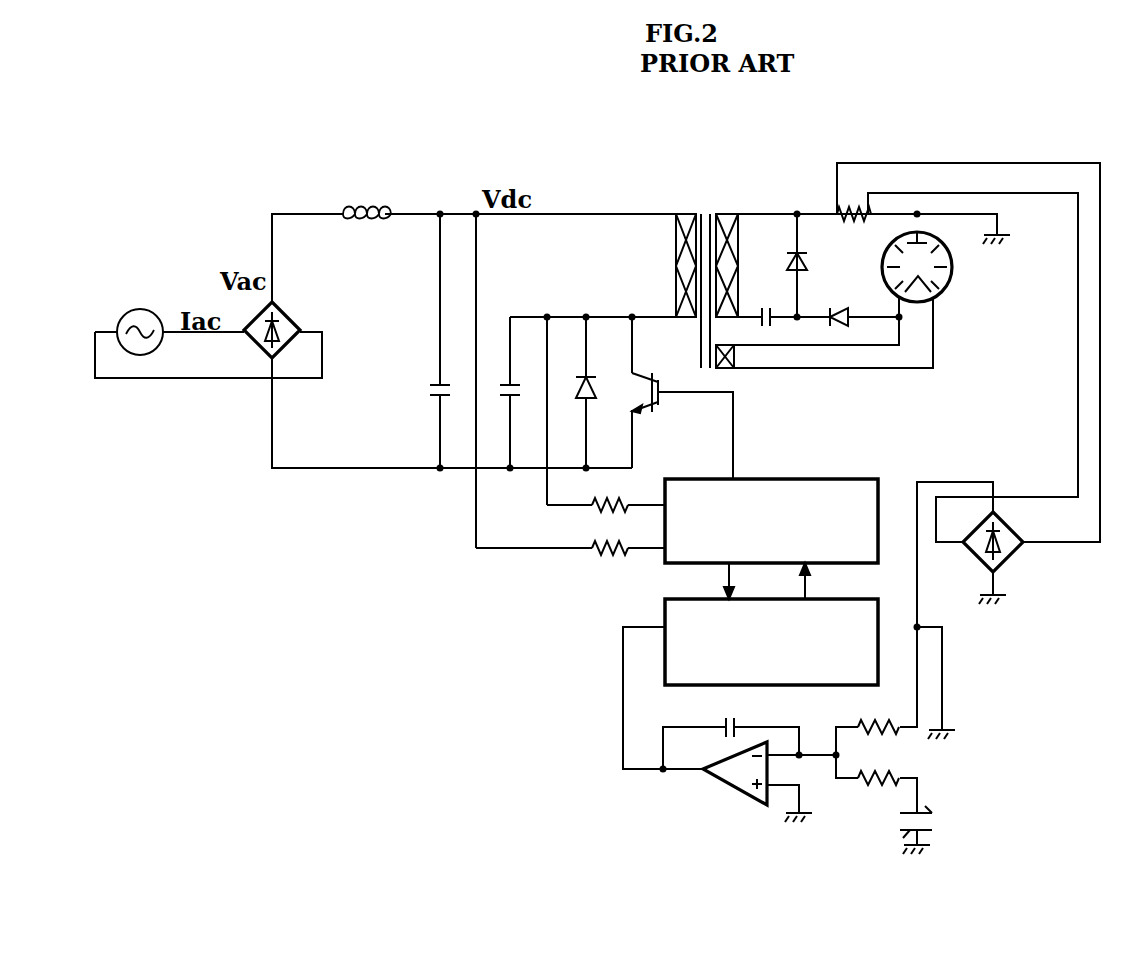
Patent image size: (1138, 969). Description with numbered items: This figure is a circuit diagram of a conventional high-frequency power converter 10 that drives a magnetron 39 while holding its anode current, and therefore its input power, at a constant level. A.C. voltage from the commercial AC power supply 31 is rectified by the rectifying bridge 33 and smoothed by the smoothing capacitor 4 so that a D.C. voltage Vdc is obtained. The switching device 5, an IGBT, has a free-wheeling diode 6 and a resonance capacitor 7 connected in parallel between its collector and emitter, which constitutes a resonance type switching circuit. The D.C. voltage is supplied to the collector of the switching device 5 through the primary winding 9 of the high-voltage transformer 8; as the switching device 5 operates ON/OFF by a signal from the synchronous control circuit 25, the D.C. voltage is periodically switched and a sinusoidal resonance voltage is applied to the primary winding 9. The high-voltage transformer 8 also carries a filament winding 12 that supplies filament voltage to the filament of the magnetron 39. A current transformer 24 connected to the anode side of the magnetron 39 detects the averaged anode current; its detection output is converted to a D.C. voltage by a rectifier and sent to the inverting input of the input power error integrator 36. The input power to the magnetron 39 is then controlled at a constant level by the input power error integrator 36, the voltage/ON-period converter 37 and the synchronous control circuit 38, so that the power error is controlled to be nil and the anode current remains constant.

The switching power supply circuit 10 is at (620, 188).
The commercial AC power supply 31 is at (118, 304).
The rectifying bridge 33 is at (291, 308).
The smoothing capacitor 4 is at (420, 390).
The resonance capacitor 7 is at (496, 374).
The free-wheeling diode 6 is at (598, 385).
The switching device 5 is at (656, 412).
The high-voltage transformer 8 is at (717, 278).
The primary winding 9 is at (673, 271).
The filament winding 12 is at (735, 368).
The current transformer 24 is at (835, 197).
The magnetron 39 is at (953, 275).
The synchronous control circuit 25 is at (1010, 555).
The synchronous control circuit 38 is at (852, 451).
The voltage/ON-period converter 37 is at (855, 580).
The input power error integrator 36 is at (722, 790).